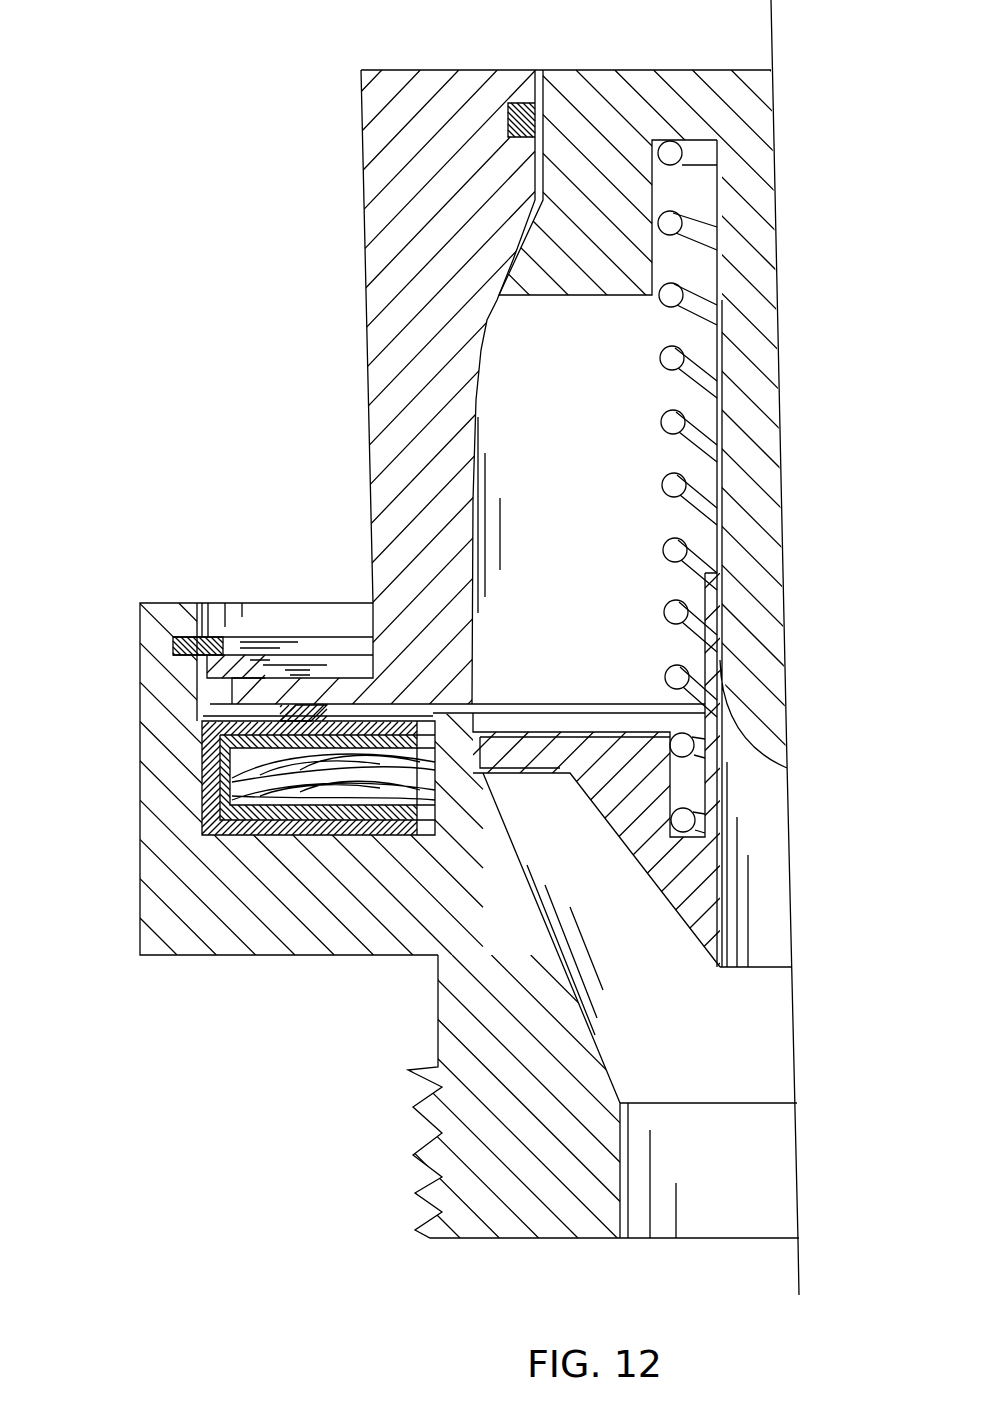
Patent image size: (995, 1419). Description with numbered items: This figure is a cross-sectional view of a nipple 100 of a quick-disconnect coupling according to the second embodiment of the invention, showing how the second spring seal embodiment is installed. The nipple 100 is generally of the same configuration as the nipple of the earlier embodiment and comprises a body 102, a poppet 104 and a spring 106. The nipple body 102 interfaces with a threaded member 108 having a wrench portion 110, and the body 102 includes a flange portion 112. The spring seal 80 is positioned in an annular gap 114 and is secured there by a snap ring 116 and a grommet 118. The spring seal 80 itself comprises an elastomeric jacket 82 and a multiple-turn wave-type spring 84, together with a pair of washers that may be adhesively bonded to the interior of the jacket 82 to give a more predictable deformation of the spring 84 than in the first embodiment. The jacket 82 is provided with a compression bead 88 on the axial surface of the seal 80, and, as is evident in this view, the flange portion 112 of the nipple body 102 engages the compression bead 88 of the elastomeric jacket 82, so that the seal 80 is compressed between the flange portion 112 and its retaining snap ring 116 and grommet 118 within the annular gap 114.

The nipple 100 is at (333, 425).
The body 102 is at (382, 181).
The poppet 104 is at (627, 107).
The spring 106 is at (662, 358).
The threaded member 108 is at (418, 1072).
The wrench portion 110 is at (183, 905).
The flange portion 112 is at (362, 655).
The annular gap 114 is at (205, 703).
The snap ring 116 is at (200, 615).
The grommet 118 is at (338, 668).
The spring seal 80 is at (225, 795).
The elastomeric jacket 82 is at (272, 843).
The multiple-turn wave-type spring 84 is at (212, 830).
The compression bead 88 is at (213, 745).